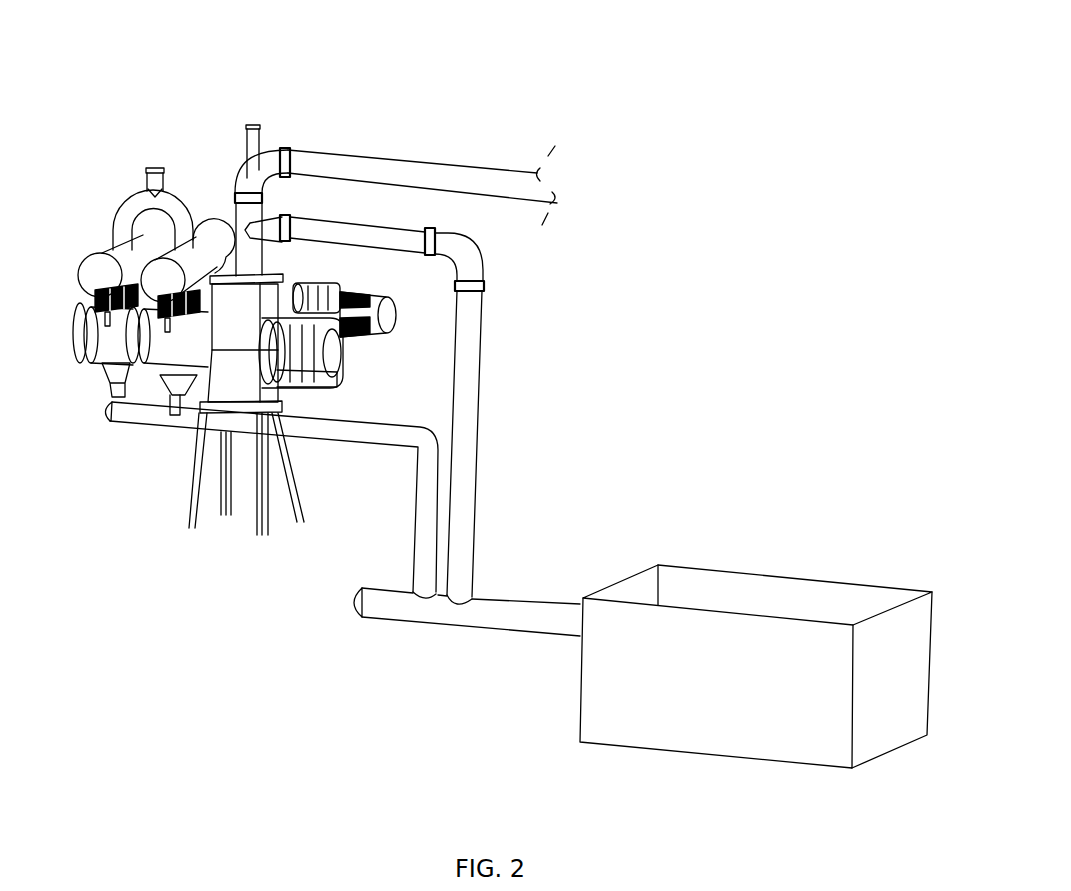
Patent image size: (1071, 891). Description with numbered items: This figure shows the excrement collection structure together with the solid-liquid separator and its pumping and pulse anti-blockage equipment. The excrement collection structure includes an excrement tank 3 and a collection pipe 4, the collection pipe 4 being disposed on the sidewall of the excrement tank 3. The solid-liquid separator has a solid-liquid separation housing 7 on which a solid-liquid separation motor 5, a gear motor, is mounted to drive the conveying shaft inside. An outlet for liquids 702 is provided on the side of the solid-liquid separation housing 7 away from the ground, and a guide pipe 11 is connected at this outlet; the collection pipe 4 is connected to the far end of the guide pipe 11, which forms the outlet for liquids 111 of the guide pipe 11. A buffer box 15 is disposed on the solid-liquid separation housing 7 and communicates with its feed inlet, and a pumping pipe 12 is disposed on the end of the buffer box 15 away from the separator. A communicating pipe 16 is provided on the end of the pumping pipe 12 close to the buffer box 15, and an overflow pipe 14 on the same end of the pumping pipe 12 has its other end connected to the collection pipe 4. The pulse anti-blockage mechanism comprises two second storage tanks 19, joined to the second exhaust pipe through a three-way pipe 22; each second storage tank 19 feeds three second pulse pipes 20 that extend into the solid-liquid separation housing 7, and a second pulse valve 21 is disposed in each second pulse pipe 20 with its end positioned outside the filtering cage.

The excrement tank 3 is at (678, 692).
The collection pipe 4 is at (523, 622).
The solid-liquid separation motor 5 is at (388, 316).
The solid-liquid separation housing 7 is at (160, 355).
The outlet for liquids 702 is at (178, 410).
The guide pipe 11 is at (348, 432).
The outlet for liquids 111 is at (424, 590).
The pumping pipe 12 is at (392, 175).
The overflow pipe 14 is at (380, 243).
The buffer box 15 is at (240, 313).
The communicating pipe 16 is at (262, 132).
The second storage tank 19 is at (106, 265).
The second pulse pipe 20 is at (102, 312).
The second pulse valve 21 is at (102, 267).
The three-way pipe 22 is at (168, 202).